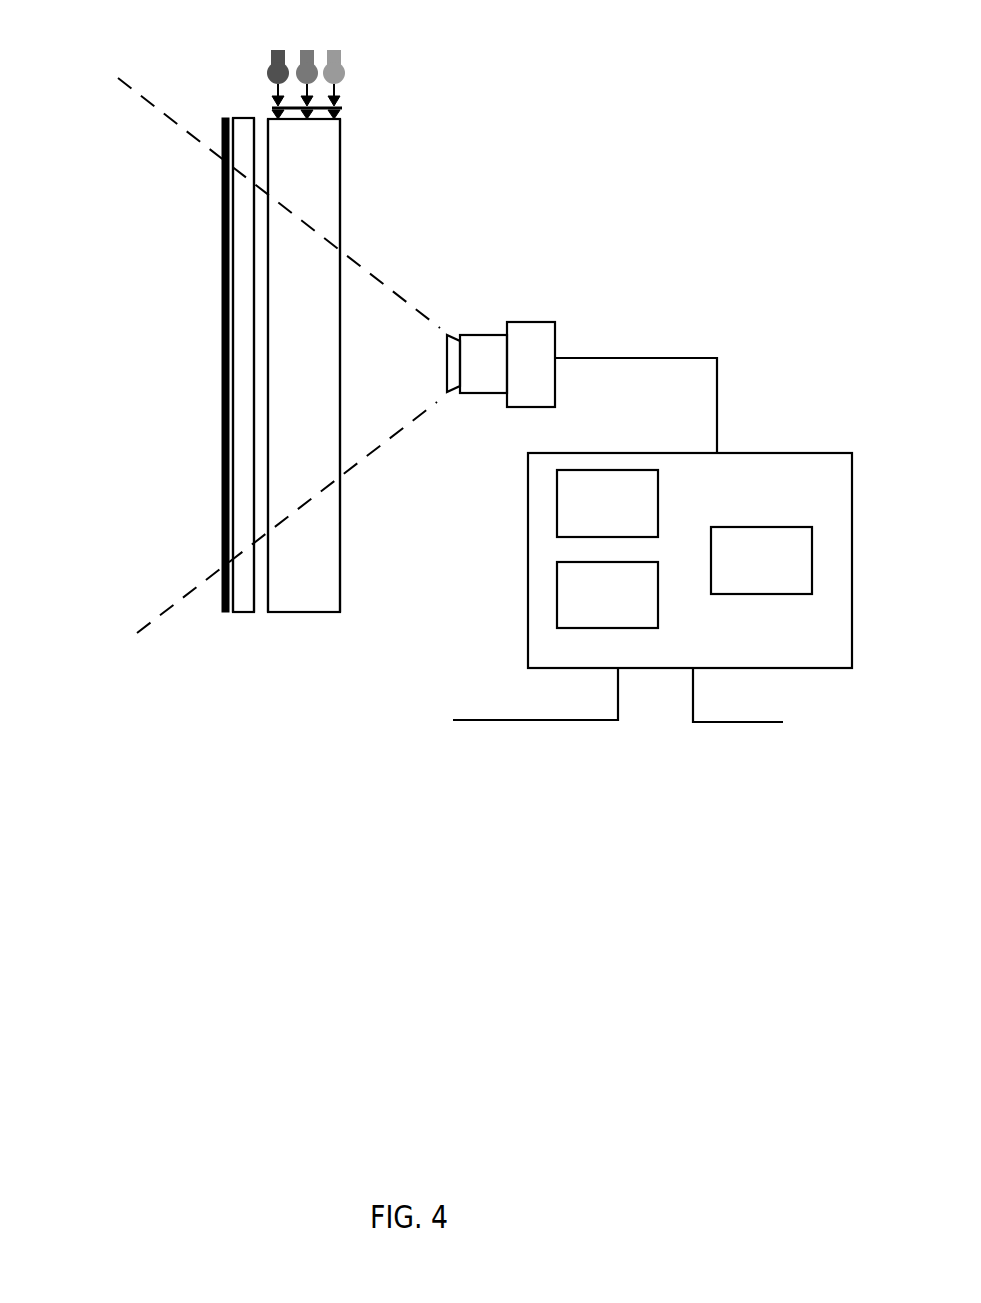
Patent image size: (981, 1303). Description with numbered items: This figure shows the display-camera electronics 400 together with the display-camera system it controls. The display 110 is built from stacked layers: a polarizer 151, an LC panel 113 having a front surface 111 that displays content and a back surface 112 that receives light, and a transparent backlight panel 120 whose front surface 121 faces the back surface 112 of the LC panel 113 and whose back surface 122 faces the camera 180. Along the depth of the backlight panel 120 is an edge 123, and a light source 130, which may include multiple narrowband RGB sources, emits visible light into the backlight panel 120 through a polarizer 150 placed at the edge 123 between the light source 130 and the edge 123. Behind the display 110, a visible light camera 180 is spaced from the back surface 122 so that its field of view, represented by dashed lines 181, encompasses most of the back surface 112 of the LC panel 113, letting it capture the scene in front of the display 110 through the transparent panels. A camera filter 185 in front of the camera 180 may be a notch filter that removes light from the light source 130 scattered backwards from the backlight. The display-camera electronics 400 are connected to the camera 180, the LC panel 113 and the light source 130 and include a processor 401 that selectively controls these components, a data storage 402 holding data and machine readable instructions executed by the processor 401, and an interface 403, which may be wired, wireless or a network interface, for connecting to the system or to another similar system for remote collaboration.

The display 110 is at (280, 672).
The front surface 111 is at (233, 390).
The back surface 112 is at (253, 332).
The LC panel 113 is at (250, 631).
The backlight panel 120 is at (320, 612).
The front surface 121 is at (270, 348).
The back surface 122 is at (340, 393).
The edge 123 is at (326, 122).
The light source 130 is at (348, 45).
The polarizer 150 is at (341, 107).
The polarizer 151 is at (222, 503).
The camera 180 is at (535, 322).
The dashed lines 181 is at (403, 303).
The camera filter 185 is at (450, 388).
The display-camera electronics 400 is at (750, 453).
The processor 401 is at (607, 503).
The data storage 402 is at (607, 595).
The interface 403 is at (761, 560).